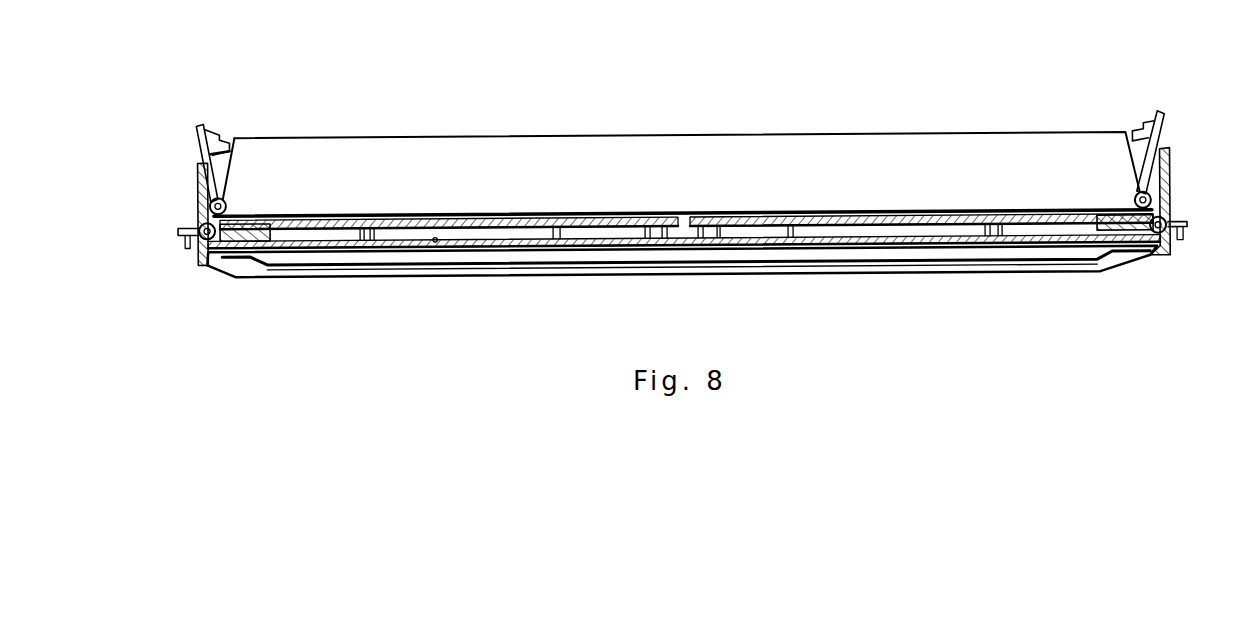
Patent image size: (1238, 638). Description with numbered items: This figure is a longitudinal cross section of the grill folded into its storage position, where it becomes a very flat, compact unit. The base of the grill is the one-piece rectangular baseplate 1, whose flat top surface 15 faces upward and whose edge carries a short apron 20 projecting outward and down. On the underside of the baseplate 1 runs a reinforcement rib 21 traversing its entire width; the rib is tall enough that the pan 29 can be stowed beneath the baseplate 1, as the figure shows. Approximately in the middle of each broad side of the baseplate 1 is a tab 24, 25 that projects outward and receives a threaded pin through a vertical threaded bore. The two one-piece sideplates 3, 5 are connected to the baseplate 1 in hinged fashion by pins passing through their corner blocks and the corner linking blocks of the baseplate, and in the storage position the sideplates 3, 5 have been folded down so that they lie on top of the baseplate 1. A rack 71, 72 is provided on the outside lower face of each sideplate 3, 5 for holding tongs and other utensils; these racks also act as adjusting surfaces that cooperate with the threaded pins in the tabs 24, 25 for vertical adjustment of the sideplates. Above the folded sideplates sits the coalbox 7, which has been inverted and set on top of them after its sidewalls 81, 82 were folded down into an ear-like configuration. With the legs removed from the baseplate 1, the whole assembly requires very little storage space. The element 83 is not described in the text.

The baseplate 1 is at (203, 277).
The sideplate 3 is at (862, 222).
The sideplate 5 is at (597, 232).
The coalbox 7 is at (685, 145).
The flat top surface 15 is at (433, 240).
The apron 20 is at (205, 258).
The reinforcement rib 21 is at (248, 265).
The tab 24 is at (1187, 228).
The tab 25 is at (178, 232).
The pan 29 is at (497, 267).
The rack 71 is at (200, 196).
The rack 72 is at (1170, 172).
The coalbox sidewall 81 is at (200, 142).
The coalbox sidewall 82 is at (1161, 122).
The stop block 83 is at (217, 128).